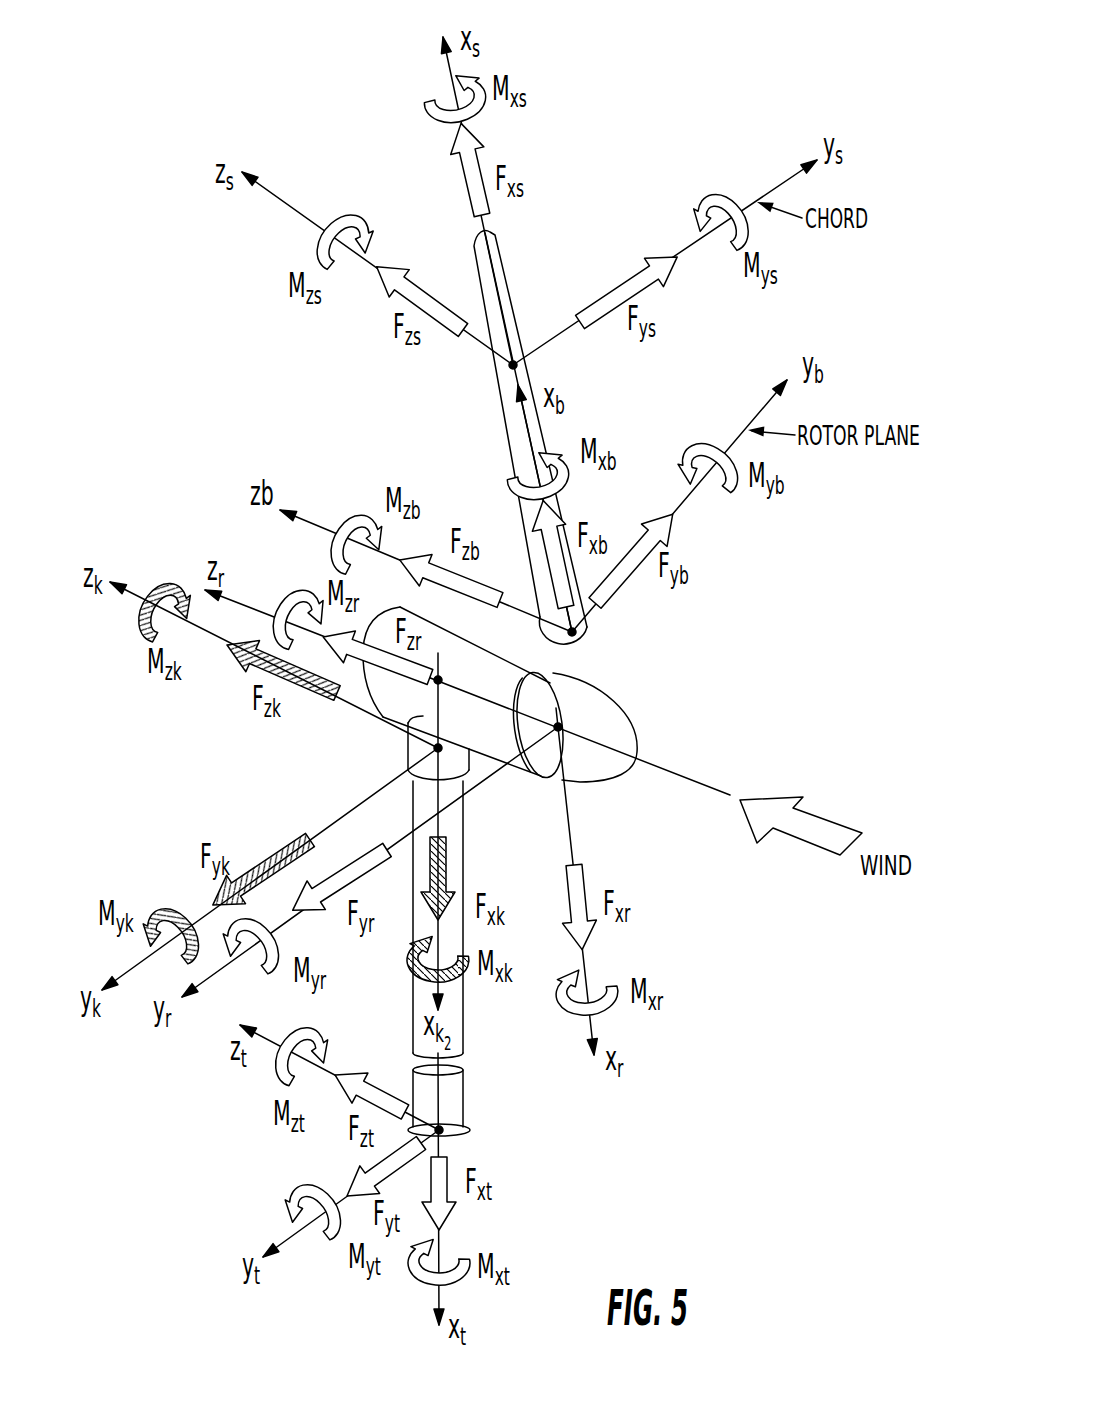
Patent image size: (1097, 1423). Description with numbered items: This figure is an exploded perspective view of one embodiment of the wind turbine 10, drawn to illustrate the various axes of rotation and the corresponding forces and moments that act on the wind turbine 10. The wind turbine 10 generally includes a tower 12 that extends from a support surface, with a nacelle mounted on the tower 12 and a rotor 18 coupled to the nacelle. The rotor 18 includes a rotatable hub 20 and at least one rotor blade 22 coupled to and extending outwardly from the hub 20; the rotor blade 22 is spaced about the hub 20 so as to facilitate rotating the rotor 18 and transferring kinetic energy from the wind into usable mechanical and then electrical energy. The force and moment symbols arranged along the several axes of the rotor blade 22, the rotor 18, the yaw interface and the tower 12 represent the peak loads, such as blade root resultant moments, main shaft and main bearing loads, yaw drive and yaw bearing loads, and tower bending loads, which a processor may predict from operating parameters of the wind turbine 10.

The wind turbine 10 is at (800, 72).
The tower 12 is at (463, 1104).
The rotor 18 is at (716, 680).
The rotatable hub 20 is at (613, 738).
The rotor blade 22 is at (507, 433).